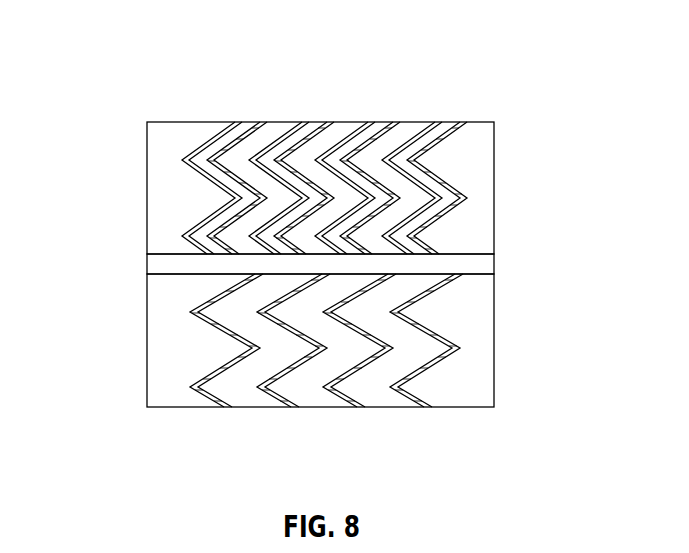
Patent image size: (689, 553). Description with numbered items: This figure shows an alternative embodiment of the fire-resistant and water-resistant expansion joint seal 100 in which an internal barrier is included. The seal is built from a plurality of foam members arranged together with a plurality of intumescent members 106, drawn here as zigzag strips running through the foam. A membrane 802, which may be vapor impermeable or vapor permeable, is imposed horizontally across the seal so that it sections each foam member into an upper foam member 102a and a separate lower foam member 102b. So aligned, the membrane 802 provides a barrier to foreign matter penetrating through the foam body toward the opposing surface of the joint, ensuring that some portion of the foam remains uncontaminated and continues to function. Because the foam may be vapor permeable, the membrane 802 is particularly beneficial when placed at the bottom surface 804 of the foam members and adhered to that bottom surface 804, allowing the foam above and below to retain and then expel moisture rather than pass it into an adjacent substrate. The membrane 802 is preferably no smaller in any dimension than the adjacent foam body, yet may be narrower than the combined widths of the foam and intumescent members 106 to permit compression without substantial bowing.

The fire-resistant and water-resistant expansion joint seal 100 is at (115, 38).
The upper foam member 102a is at (305, 160).
The lower foam member 102b is at (443, 410).
The intumescent members 106 is at (448, 122).
The membrane 802 is at (413, 122).
The bottom surface 804 is at (150, 260).